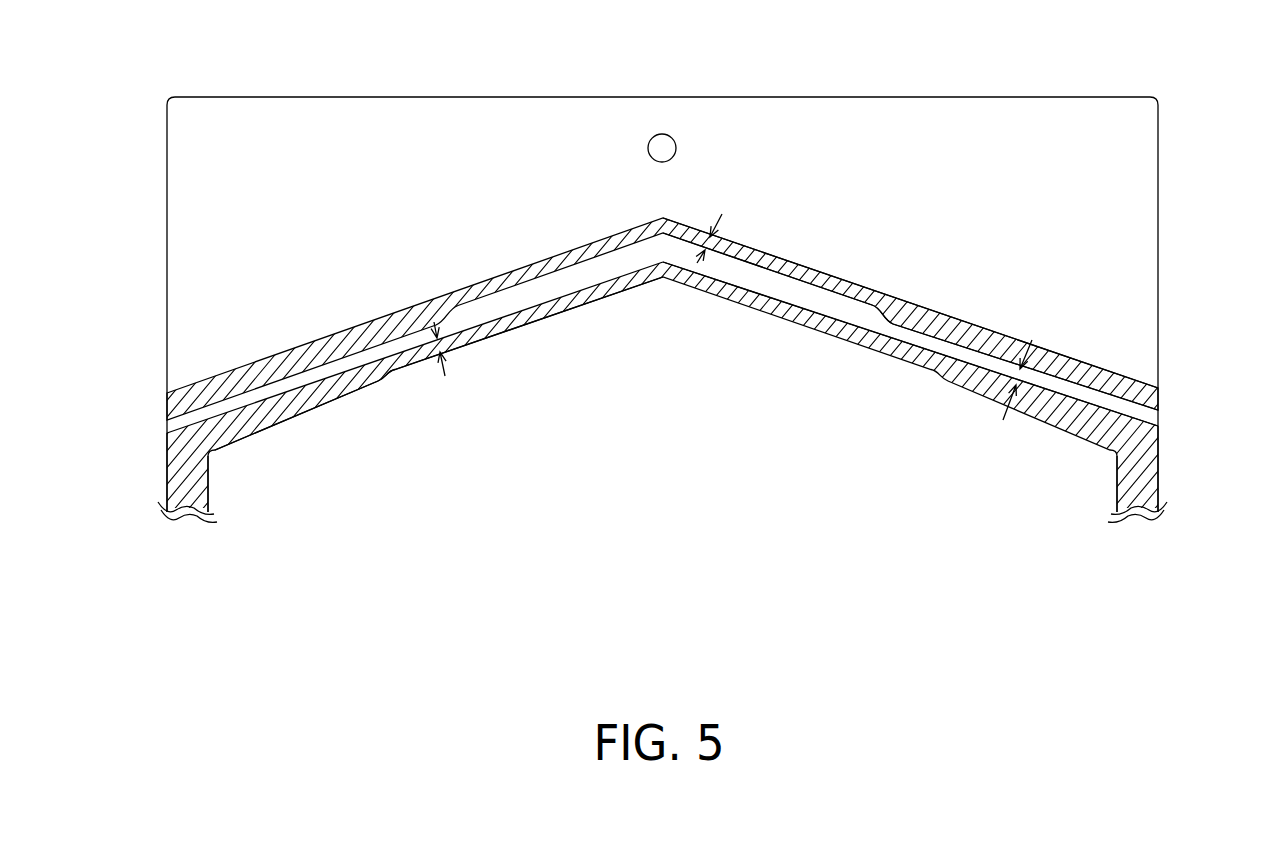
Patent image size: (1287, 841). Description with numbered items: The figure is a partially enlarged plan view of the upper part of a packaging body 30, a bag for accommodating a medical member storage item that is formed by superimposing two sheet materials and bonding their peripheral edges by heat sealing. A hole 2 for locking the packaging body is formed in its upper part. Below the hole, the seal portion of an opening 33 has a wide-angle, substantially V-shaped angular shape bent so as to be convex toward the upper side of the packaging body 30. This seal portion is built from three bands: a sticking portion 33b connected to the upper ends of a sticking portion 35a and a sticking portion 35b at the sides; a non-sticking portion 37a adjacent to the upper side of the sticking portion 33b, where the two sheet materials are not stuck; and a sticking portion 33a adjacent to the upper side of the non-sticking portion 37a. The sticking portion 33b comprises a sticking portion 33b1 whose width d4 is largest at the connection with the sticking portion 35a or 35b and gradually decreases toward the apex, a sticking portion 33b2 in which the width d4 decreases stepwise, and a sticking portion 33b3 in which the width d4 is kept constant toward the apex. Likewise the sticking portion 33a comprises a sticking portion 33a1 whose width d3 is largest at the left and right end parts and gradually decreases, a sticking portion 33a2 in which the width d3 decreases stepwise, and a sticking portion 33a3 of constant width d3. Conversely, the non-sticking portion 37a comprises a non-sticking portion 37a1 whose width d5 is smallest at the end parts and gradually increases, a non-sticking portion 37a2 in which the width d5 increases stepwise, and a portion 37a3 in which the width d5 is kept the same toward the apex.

The hole 2 is at (660, 140).
The packaging body 30 is at (1185, 112).
The seal portion of an opening 33 is at (486, 251).
The sticking portion 33a is at (1066, 343).
The sticking portion 33a1 is at (957, 332).
The sticking portion 33a2 is at (882, 307).
The sticking portion 33a3 is at (771, 255).
The sticking portion 33b is at (541, 318).
The sticking portion 33b1 is at (283, 407).
The sticking portion 33b2 is at (385, 371).
The sticking portion 33b3 is at (592, 280).
The non-sticking portion 37a is at (795, 282).
The non-sticking portion 37a1 is at (950, 357).
The non-sticking portion 37a2 is at (860, 313).
The sticking portion 37a3 is at (747, 273).
The width of the sticking portion 33a d3 is at (717, 221).
The width of the sticking portion 33b d4 is at (449, 370).
The width of the non-sticking portion 37a d5 is at (1004, 407).
The sticking portion 35a is at (183, 458).
The sticking portion 35b is at (1143, 462).